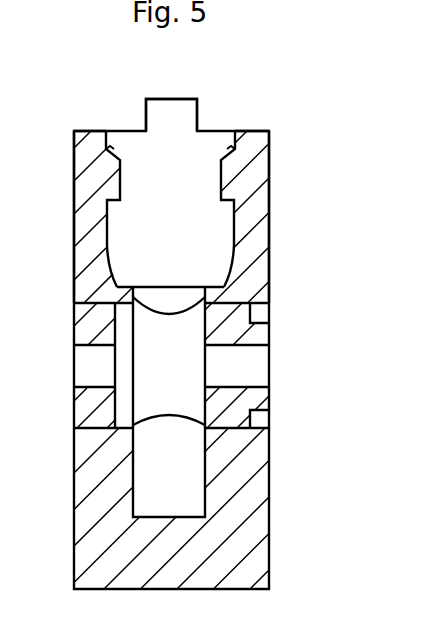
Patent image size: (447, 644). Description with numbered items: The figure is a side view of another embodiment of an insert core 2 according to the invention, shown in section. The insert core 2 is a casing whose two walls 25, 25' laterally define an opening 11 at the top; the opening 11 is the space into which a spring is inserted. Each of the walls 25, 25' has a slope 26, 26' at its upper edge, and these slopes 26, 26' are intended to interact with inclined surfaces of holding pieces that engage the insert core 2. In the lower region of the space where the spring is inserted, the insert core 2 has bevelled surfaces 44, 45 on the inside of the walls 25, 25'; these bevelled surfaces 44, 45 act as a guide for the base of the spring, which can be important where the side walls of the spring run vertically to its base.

The insert core 2 is at (295, 307).
The opening 11 is at (173, 157).
The wall 25 is at (72, 217).
The wall 25' is at (278, 217).
The slope 26 is at (118, 105).
The slope 26' is at (235, 105).
The bevelled surface 44 is at (112, 238).
The bevelled surface 45 is at (232, 252).